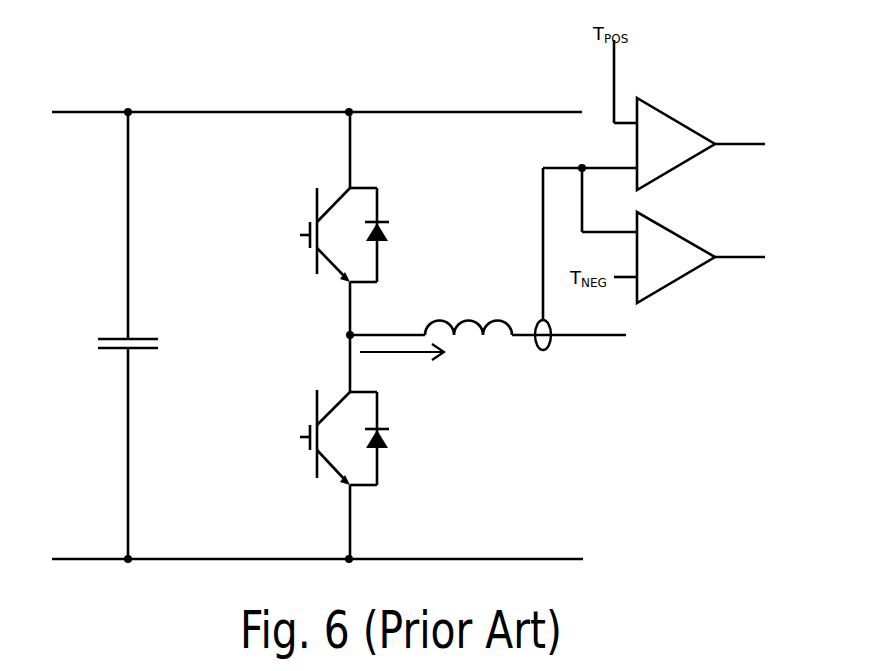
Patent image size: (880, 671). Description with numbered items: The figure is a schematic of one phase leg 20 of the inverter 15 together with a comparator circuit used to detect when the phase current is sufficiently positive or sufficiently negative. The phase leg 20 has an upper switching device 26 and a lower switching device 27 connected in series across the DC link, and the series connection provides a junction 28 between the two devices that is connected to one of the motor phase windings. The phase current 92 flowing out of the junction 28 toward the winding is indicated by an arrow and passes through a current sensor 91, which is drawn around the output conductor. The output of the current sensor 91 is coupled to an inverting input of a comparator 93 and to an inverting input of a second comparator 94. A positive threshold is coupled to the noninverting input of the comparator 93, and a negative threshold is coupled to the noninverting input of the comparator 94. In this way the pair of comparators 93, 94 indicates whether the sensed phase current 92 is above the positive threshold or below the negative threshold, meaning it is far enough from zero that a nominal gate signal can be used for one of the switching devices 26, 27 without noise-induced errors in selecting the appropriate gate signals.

The inverter 15 is at (108, 337).
The phase leg 20 is at (352, 96).
The upper switching device 26 is at (382, 185).
The lower switching device 27 is at (381, 490).
The junction 28 is at (347, 333).
The current sensor 91 is at (546, 350).
The output current i 92 is at (407, 354).
The comparator 93 is at (670, 113).
The comparator 94 is at (690, 240).